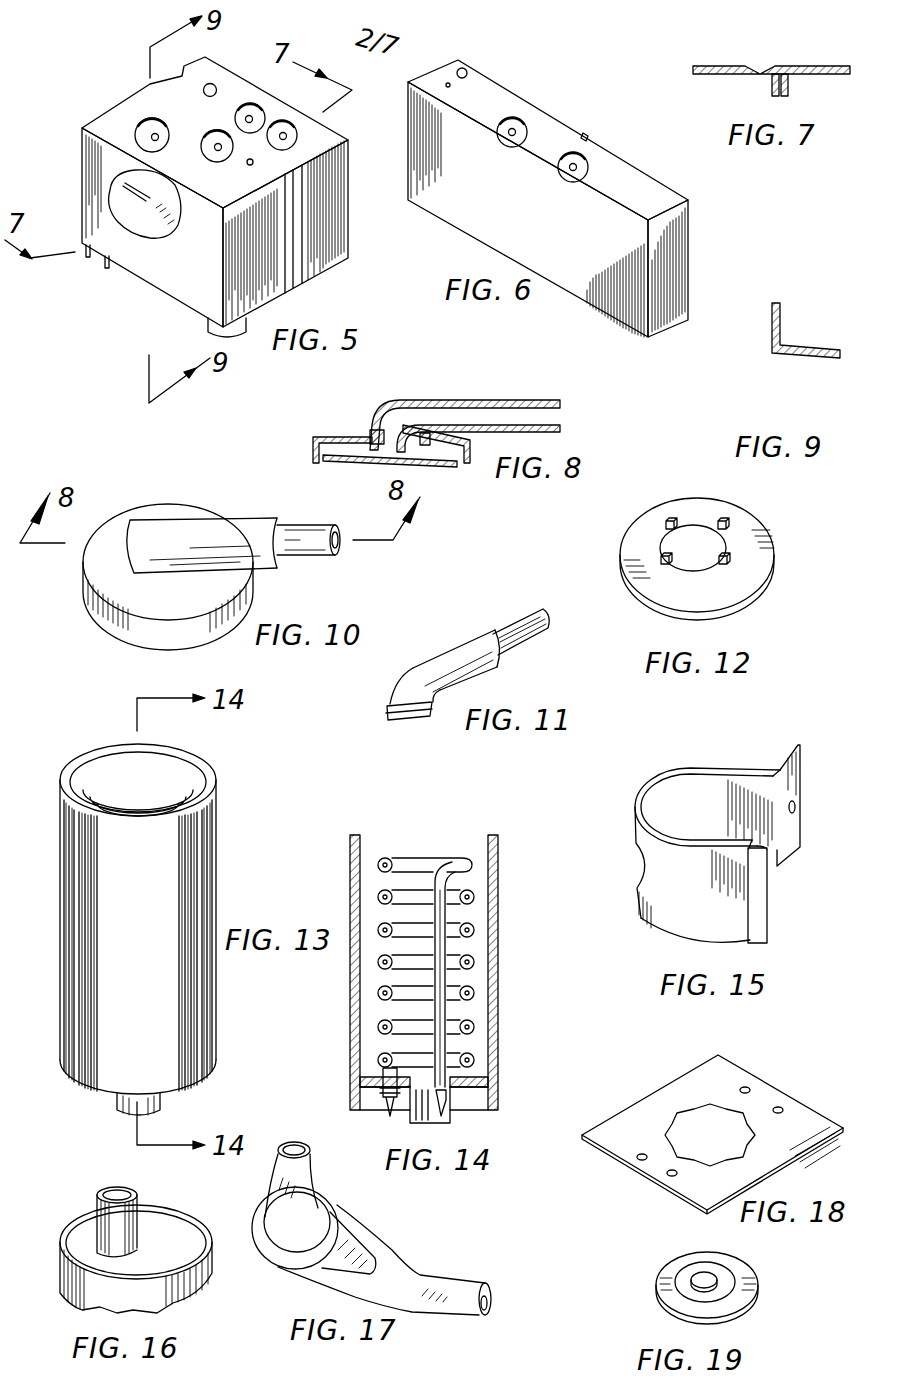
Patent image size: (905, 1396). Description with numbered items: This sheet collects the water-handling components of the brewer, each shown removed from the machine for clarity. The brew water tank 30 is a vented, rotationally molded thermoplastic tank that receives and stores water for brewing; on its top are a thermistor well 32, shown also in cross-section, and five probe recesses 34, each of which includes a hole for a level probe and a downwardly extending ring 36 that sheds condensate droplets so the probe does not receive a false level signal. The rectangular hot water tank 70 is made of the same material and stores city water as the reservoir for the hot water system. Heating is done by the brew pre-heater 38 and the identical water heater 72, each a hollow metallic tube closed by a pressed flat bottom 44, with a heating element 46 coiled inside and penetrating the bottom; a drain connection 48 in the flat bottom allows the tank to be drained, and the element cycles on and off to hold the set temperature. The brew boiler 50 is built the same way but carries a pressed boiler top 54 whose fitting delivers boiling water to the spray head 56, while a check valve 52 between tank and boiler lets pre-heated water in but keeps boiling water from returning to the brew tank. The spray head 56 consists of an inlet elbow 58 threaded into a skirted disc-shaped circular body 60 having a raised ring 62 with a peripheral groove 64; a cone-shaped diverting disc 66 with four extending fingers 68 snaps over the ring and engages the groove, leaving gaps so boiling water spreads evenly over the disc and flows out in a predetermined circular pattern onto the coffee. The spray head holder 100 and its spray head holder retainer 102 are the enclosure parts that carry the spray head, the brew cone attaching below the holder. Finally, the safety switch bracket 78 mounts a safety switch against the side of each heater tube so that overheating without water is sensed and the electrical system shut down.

In FIG. 5, the brew water tank 30 is at (125, 268).
In FIG. 5, the thermistor well 32 is at (108, 199).
In FIG. 9, the thermistor well 32 is at (835, 313).
In FIG. 5, the probe recess 34 is at (153, 124).
In FIG. 6, the probe recess 34 is at (450, 83).
In FIG. 7, the probe recess 34 is at (788, 80).
In FIG. 5, the ring 36 is at (137, 138).
In FIG. 6, the ring 36 is at (522, 145).
In FIG. 7, the ring 36 is at (745, 72).
In FIG. 13, the brew pre-heater 38 is at (191, 919).
In FIG. 14, the brew pre-heater 38 is at (473, 972).
In FIG. 14, the flat bottom 44 is at (467, 1088).
In FIG. 13, the heating element 46 is at (170, 774).
In FIG. 14, the heating element 46 is at (440, 860).
In FIG. 13, the drain connection 48 is at (118, 1104).
In FIG. 14, the drain connection 48 is at (403, 1118).
In FIG. 16, the brew boiler 50 is at (63, 1214).
In FIG. 17, the check valve 52 is at (392, 1242).
In FIG. 16, the boiler top 54 is at (170, 1230).
In FIG. 10, the spray head 56 is at (188, 508).
In FIG. 8, the inlet elbow 58 is at (505, 400).
In FIG. 10, the inlet elbow 58 is at (292, 555).
In FIG. 11, the inlet elbow 58 is at (468, 635).
In FIG. 8, the circular body 60 is at (338, 437).
In FIG. 10, the circular body 60 is at (108, 625).
In FIG. 8, the raised ring 62 is at (385, 462).
In FIG. 8, the groove 64 is at (398, 425).
In FIG. 8, the diverting disc 66 is at (343, 462).
In FIG. 12, the diverting disc 66 is at (775, 555).
In FIG. 8, the fingers 68 is at (375, 435).
In FIG. 12, the fingers 68 is at (668, 522).
In FIG. 6, the hot water tank 70 is at (702, 262).
In FIG. 13, the water heater 72 is at (220, 836).
In FIG. 14, the water heater 72 is at (500, 940).
In FIG. 15, the safety switch bracket 78 is at (705, 766).
In FIG. 19, the spray head holder 100 is at (672, 1265).
In FIG. 18, the spray head holder retainer 102 is at (678, 1078).